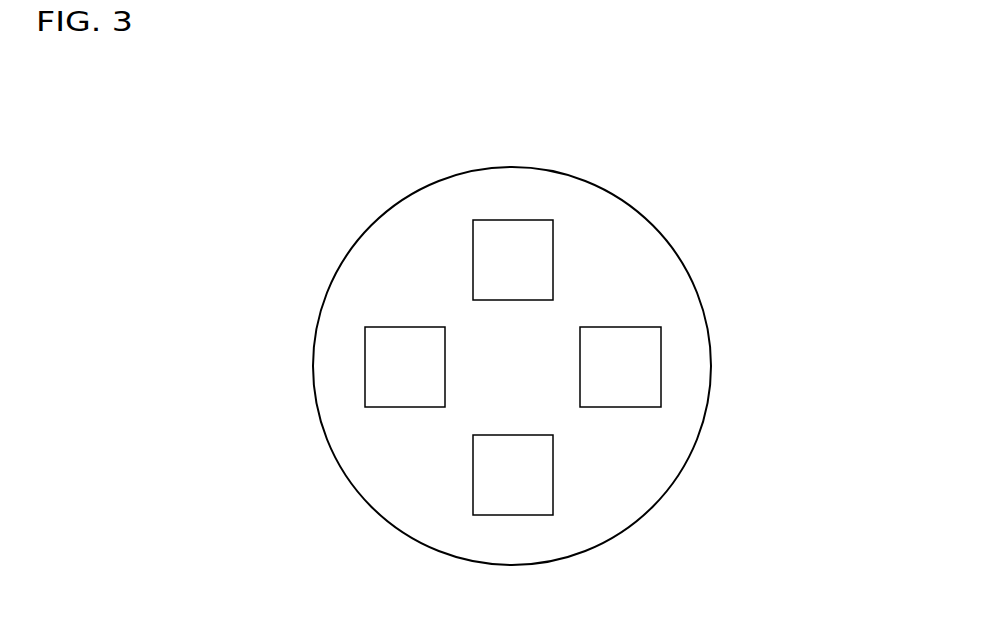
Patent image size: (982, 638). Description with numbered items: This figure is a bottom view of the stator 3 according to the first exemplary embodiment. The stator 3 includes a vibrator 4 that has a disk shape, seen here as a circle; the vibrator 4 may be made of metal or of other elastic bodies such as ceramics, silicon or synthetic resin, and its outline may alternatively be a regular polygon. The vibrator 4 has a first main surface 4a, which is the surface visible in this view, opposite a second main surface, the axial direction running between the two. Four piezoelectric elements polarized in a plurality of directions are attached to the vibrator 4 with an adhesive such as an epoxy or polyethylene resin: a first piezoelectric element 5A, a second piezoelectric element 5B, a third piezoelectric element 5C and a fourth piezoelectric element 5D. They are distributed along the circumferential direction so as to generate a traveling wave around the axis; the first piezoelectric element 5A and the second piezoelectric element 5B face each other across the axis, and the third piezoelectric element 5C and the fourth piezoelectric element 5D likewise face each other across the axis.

The stator 3 is at (248, 116).
The vibrator 4 is at (328, 336).
The first main surface 4a is at (692, 396).
The first piezoelectric element 5A is at (617, 390).
The second piezoelectric element 5B is at (402, 388).
The third piezoelectric element 5C is at (509, 237).
The fourth piezoelectric element 5D is at (510, 498).